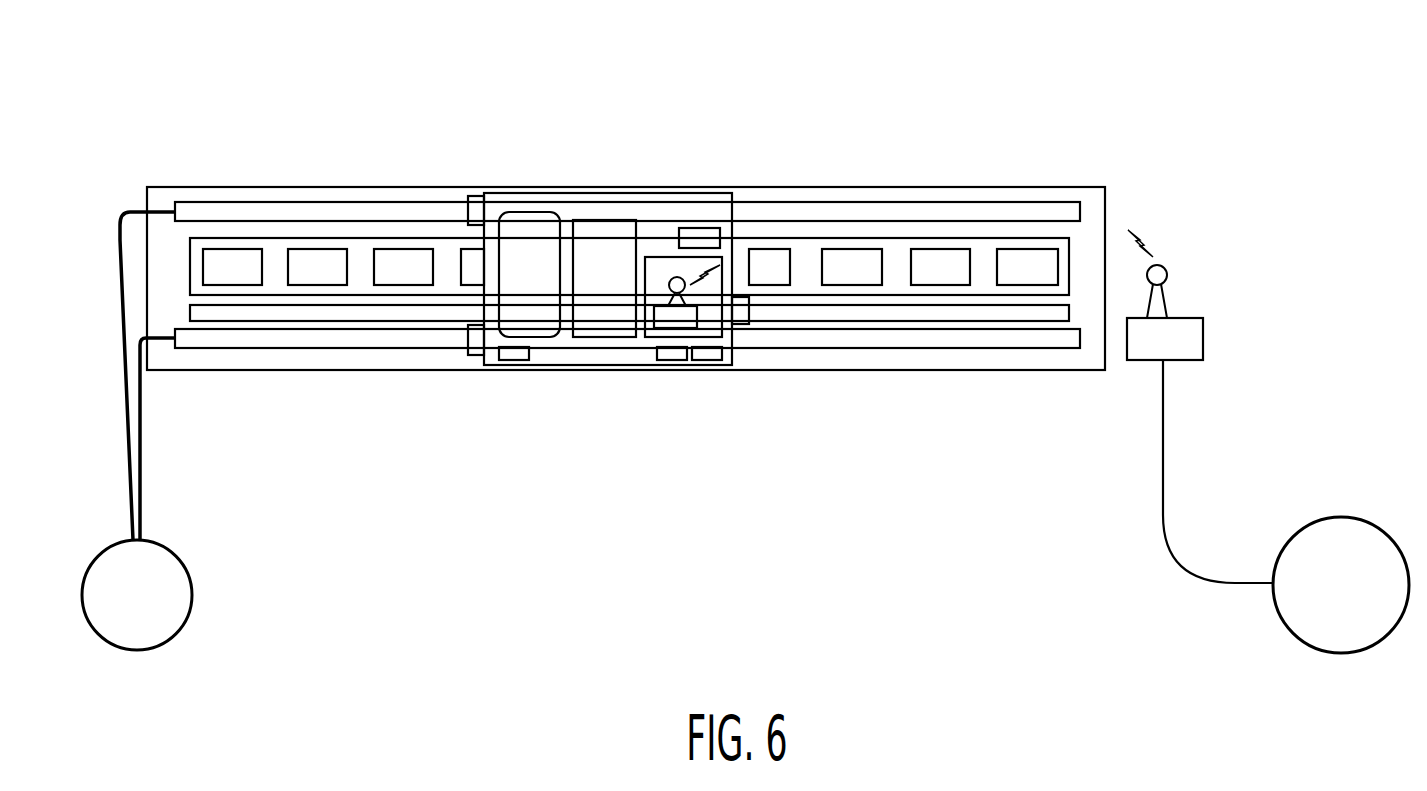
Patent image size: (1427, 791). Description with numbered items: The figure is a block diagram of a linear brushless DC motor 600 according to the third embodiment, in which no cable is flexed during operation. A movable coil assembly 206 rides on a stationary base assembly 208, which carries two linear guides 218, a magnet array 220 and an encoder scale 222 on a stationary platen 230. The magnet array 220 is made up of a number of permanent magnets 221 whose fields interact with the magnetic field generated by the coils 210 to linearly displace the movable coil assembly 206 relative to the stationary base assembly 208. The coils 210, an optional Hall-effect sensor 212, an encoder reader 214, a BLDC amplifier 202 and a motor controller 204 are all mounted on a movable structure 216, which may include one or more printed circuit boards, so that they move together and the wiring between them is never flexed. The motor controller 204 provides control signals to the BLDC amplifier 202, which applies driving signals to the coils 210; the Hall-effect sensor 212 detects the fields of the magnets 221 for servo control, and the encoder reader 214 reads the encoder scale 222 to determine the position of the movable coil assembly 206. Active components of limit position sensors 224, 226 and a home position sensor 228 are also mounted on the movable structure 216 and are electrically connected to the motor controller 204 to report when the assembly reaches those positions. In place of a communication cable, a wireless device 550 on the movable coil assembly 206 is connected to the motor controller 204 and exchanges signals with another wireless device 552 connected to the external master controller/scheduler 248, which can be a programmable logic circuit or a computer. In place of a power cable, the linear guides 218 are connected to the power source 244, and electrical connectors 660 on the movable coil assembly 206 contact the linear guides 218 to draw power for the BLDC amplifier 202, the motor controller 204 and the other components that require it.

The linear BLDC motor 600 is at (1145, 127).
The stationary base assembly 208 is at (1105, 193).
The linear guides 218 is at (200, 210).
The magnet array 220 is at (629, 180).
The permanent magnets 221 is at (858, 258).
The encoder scale 222 is at (1030, 313).
The electrical connectors 660 is at (467, 208).
The encoder reader 214 is at (748, 295).
The movable coil assembly 206 is at (522, 193).
The movable structure 216 is at (687, 203).
The coils 210 is at (515, 220).
The BLDC amplifier 202 is at (601, 230).
The Hall-effect sensor 212 is at (702, 235).
The motor controller 204 is at (653, 257).
The wireless device 550 is at (697, 318).
The limit position sensor 224 is at (513, 360).
The limit position sensor 226 is at (709, 360).
The home position sensor 228 is at (676, 360).
The stationary platen 230 is at (1090, 229).
The wireless device 552 is at (1190, 337).
The power source 244 is at (192, 595).
The master controller/scheduler 248 is at (1340, 517).